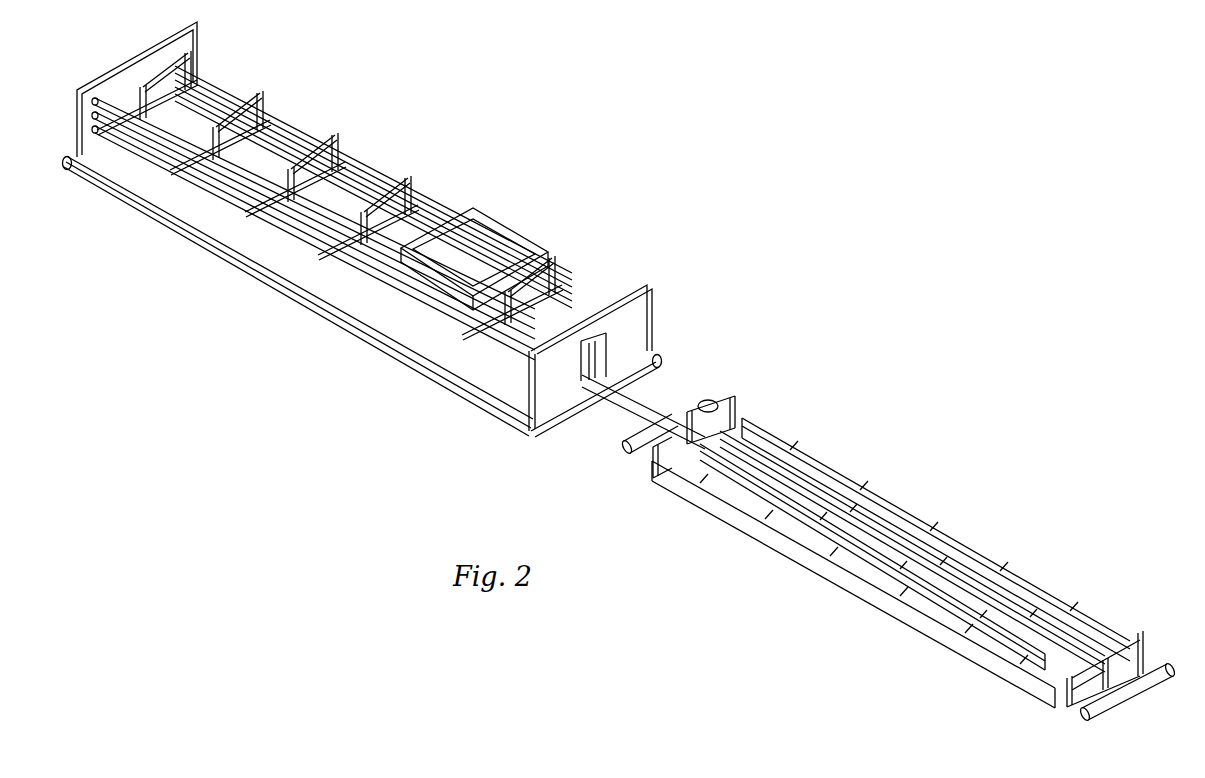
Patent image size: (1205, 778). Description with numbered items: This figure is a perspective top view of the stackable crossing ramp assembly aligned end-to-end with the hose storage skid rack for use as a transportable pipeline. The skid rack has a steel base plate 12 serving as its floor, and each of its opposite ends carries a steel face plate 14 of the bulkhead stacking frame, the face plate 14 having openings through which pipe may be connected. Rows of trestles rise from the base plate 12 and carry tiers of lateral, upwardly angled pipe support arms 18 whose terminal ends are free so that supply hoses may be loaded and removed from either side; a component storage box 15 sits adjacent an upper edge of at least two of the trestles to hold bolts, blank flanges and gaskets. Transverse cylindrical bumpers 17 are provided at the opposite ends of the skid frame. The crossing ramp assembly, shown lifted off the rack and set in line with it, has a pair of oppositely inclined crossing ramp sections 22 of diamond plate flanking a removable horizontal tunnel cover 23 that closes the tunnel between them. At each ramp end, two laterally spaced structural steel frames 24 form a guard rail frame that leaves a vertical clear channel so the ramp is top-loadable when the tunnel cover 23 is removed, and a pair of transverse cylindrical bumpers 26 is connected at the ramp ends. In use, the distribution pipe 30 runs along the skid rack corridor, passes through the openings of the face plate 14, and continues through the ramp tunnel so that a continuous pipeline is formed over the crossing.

The base plate 12 is at (135, 172).
The face plate 14 is at (639, 348).
The component storage box 15 is at (487, 275).
The transverse cylindrical bumper 17 is at (527, 434).
The pipe support arm 18 is at (412, 189).
The crossing ramp section 22 is at (728, 511).
The tunnel cover 23 is at (764, 463).
The structural steel frame 24 is at (725, 410).
The transverse cylindrical bumper 26 is at (624, 442).
The distribution pipe 30 is at (262, 127).